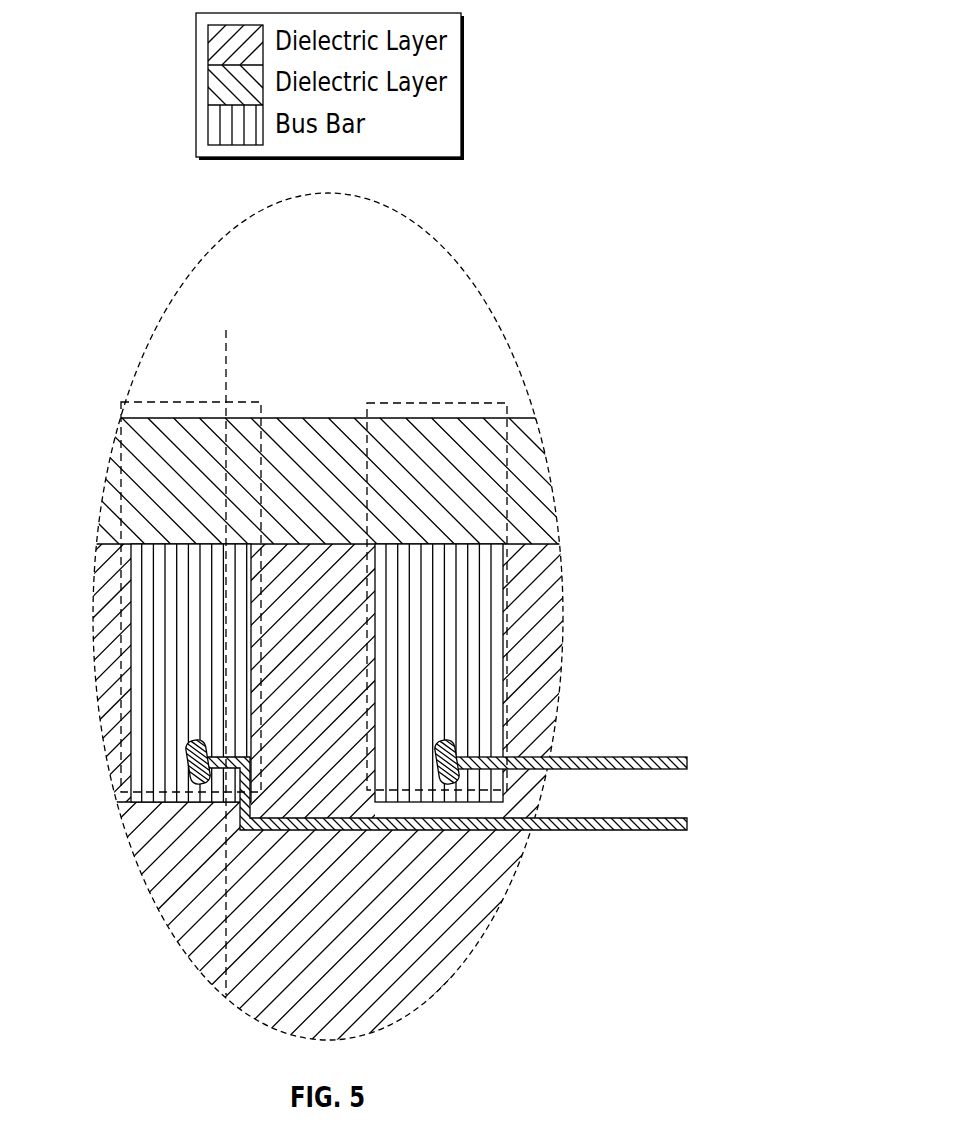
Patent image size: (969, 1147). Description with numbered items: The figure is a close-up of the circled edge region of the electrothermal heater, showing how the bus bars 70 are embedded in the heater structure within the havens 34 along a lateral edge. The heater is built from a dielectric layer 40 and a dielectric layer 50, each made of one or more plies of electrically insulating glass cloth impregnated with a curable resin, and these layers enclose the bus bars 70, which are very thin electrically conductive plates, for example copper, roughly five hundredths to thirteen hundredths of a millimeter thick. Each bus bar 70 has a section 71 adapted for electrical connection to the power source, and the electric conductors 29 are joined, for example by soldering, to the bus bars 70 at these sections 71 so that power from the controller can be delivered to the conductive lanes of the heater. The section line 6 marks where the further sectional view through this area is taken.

The section line 6- 6 is at (226, 330).
The electric conductors 29 is at (637, 758).
The havens 34 is at (118, 415).
The dielectric layer 40 is at (300, 479).
The dielectric layer 50 is at (336, 904).
The bus bar 70 is at (206, 601).
The section 71 is at (172, 760).